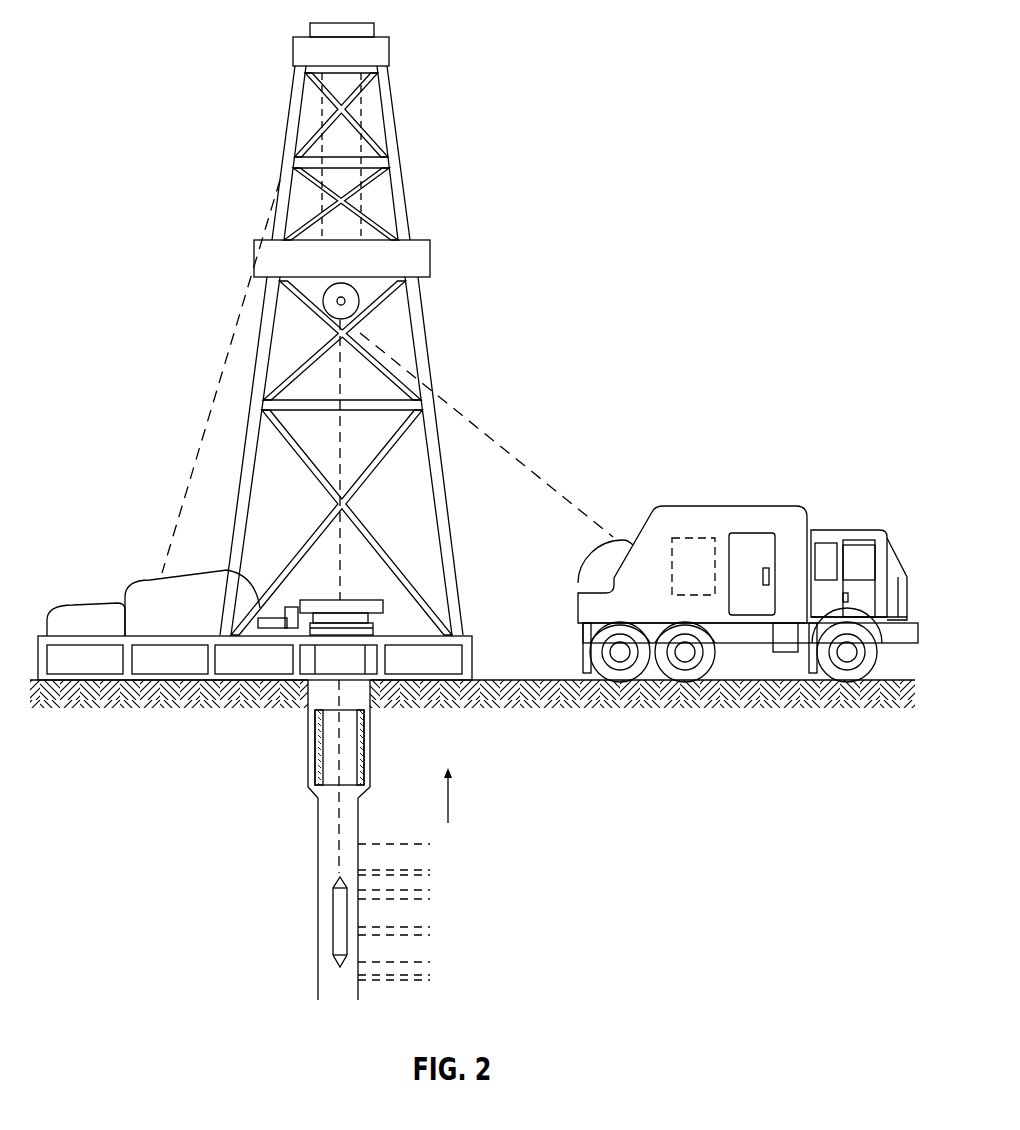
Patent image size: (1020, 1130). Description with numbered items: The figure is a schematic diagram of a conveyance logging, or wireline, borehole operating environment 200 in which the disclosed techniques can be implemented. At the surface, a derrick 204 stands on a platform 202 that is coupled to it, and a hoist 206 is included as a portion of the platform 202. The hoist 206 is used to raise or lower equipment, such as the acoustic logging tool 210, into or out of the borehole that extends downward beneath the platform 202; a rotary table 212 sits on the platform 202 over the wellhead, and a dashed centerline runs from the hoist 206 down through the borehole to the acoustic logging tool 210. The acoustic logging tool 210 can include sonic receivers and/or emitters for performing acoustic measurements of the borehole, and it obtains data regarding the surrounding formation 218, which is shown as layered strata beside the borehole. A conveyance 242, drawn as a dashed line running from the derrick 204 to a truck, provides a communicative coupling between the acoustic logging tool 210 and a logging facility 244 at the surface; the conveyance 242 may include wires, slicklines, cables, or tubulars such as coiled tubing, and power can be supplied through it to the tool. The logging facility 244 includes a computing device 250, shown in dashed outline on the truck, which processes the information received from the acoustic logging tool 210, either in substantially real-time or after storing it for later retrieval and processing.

The conveyance logging borehole operating environment 200 is at (215, 111).
The platform 202 is at (473, 658).
The derrick 204 is at (460, 592).
The hoist 206 is at (359, 302).
The acoustic logging tool 210 is at (333, 920).
The rotary table 212 is at (352, 596).
The formation 218 is at (442, 844).
The conveyance 242 is at (503, 450).
The logging facility 244 is at (752, 533).
The computing device 250 is at (692, 538).